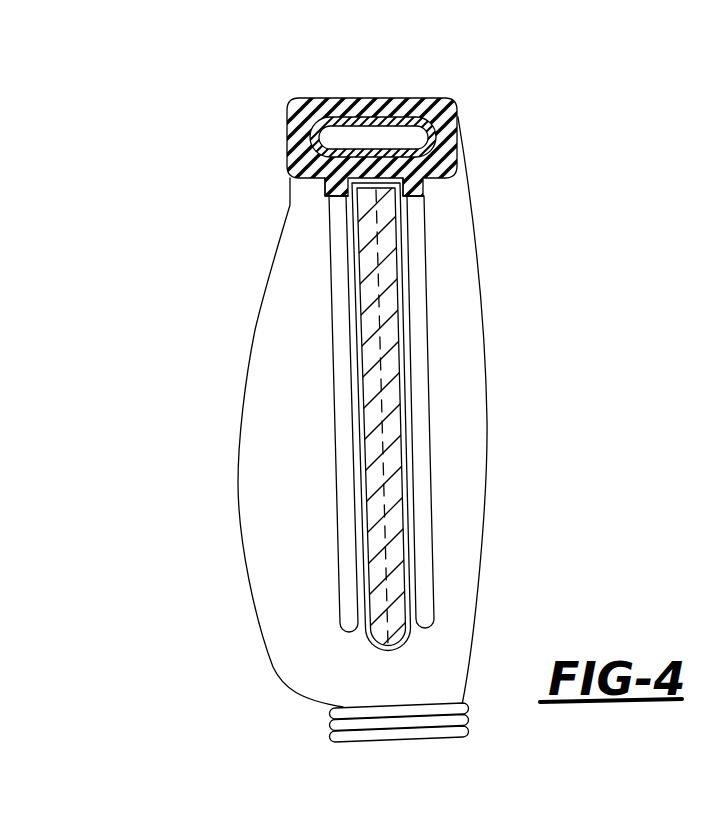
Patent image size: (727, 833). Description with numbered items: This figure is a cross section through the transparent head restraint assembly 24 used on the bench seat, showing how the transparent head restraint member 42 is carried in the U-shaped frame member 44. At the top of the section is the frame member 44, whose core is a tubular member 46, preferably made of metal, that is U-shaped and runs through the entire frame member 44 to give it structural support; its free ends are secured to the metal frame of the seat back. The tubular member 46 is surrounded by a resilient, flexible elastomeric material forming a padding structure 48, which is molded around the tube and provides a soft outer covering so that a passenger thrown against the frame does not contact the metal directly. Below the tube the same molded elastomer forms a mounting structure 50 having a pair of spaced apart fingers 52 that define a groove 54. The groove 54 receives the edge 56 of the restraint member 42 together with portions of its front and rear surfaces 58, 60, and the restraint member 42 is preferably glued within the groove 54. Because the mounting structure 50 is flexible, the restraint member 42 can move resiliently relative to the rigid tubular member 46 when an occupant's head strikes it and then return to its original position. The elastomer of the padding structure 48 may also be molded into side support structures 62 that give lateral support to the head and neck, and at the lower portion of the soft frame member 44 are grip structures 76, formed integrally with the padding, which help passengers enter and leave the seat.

The transparent head restraint assembly 24 is at (195, 295).
The transparent head restraint member 42 is at (403, 543).
The U-shaped frame member 44 is at (384, 153).
The tubular member 46 is at (458, 117).
The padding structure 48 is at (432, 99).
The mounting structure 50 is at (437, 185).
The fingers 52 is at (333, 190).
The groove 54 is at (379, 180).
The edge 56 is at (287, 172).
The front surface 58 is at (343, 350).
The rear surface 60 is at (407, 395).
The side support structures 62 is at (243, 550).
The grip structures 76 is at (338, 733).